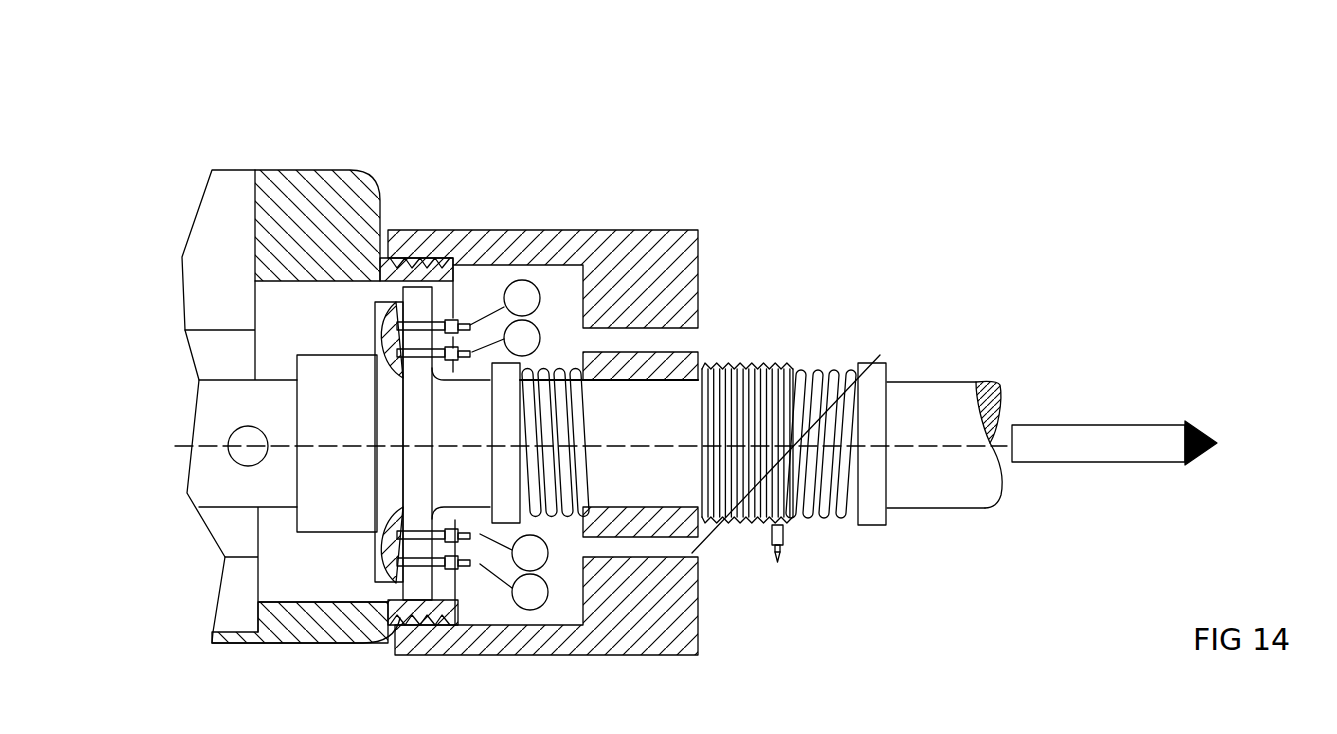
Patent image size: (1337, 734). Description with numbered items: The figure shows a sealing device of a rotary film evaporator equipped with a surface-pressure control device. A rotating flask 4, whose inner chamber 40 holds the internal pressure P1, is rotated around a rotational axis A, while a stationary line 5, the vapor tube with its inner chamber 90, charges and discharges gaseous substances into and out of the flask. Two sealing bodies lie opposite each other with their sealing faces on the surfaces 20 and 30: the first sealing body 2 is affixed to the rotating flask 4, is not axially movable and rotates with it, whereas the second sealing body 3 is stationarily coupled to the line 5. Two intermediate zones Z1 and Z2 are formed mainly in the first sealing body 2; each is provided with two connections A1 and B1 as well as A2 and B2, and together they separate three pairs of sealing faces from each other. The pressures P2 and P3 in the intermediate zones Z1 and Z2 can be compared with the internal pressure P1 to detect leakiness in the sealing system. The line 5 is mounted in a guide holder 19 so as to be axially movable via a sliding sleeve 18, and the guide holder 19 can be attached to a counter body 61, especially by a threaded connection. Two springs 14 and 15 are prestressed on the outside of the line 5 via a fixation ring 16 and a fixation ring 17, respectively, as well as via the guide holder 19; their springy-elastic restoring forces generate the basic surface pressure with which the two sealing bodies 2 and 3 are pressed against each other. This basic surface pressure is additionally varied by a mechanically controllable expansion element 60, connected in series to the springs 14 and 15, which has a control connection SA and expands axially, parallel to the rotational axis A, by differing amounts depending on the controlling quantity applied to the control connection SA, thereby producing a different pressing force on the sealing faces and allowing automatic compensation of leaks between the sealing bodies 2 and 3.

The first sealing body 2 is at (380, 314).
The second sealing body 3 is at (433, 600).
The rotating flask 4 is at (228, 680).
The line 5 is at (958, 490).
The spring 14 is at (562, 517).
The spring 15 is at (835, 512).
The fixation ring 16 is at (512, 381).
The fixation ring 17 is at (878, 483).
The sliding sleeve 18 is at (627, 378).
The guide holder 19 is at (700, 655).
The surface of the first sealing body 20 is at (415, 327).
The surface of the second sealing body 30 is at (404, 440).
The inner chamber of the rotating flask 40 is at (228, 410).
The expansion element 60 is at (730, 380).
The counter body 61 is at (239, 203).
The inner chamber of the line 90 is at (1114, 577).
The rotational axis A is at (333, 445).
The connection A1 is at (452, 360).
The connection A2 is at (458, 320).
The connection B1 is at (455, 523).
The connection B2 is at (453, 566).
The internal pressure P1 is at (248, 446).
The pressure in the intermediate zone P2 is at (510, 445).
The pressure in the intermediate zone P3 is at (509, 445).
The control connection SA is at (778, 562).
The intermediate zone Z1 is at (420, 350).
The intermediate zone Z2 is at (428, 302).